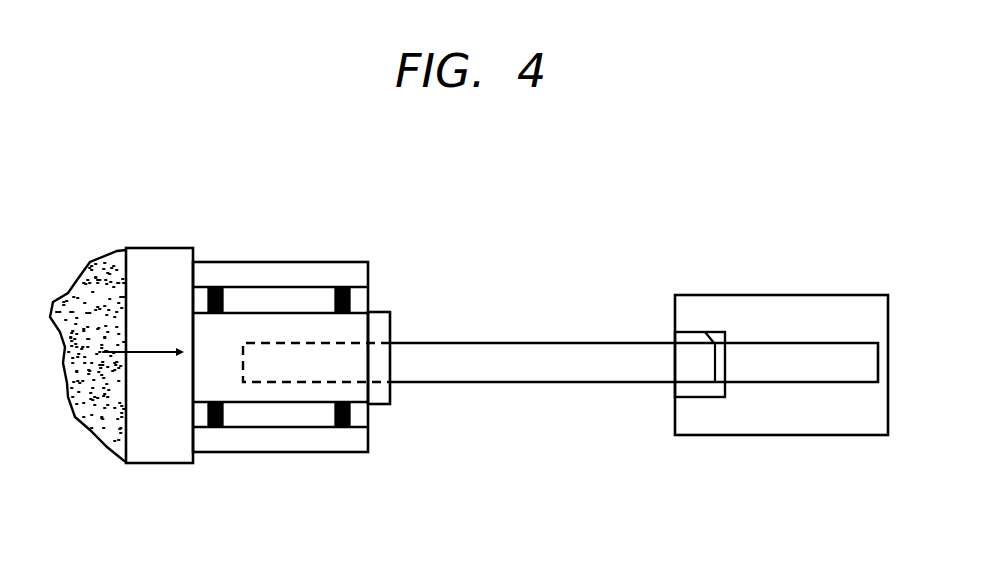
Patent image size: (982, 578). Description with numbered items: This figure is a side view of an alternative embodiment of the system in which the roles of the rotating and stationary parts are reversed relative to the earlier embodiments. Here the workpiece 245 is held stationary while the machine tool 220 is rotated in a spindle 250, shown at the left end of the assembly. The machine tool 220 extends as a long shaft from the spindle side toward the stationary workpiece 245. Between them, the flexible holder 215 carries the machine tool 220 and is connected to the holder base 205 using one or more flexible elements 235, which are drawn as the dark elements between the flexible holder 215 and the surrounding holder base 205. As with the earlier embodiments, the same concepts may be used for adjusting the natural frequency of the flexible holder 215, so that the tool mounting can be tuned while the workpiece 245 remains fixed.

The holder base 205 is at (215, 275).
The flexible holder 215 is at (383, 324).
The machine tool 220 is at (638, 367).
The flexible elements 235 is at (366, 296).
The workpiece 245 is at (787, 436).
The spindle 250 is at (103, 418).